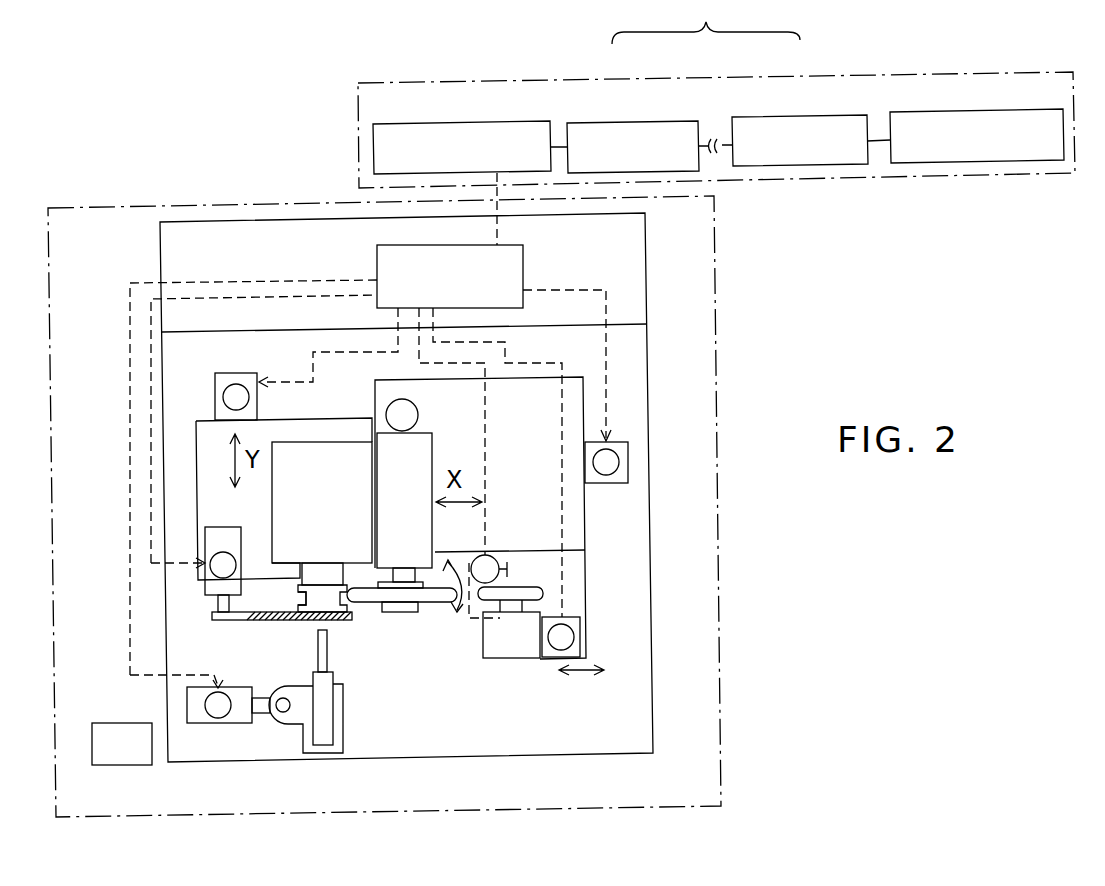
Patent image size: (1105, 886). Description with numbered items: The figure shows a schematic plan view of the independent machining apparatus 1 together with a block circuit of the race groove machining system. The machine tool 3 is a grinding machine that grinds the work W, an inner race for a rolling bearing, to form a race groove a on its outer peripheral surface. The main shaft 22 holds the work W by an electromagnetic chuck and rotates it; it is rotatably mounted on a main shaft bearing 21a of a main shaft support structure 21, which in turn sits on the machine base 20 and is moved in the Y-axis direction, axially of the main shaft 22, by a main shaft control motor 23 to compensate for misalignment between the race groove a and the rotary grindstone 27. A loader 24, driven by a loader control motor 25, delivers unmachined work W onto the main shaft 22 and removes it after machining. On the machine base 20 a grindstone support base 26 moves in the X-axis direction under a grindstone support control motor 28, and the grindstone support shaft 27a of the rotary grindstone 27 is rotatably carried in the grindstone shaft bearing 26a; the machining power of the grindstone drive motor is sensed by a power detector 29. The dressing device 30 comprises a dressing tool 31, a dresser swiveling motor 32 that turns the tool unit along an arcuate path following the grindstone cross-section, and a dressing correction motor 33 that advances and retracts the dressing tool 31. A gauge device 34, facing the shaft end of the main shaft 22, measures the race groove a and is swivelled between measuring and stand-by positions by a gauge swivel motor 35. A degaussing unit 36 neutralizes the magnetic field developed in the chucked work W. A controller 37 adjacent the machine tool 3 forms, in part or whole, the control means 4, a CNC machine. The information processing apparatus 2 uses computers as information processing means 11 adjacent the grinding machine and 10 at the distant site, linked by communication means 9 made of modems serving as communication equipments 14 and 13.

The independent machining apparatus 1 is at (150, 204).
The information processing apparatus 2 is at (358, 121).
The machine tool 3 is at (156, 372).
The control means 4 is at (377, 268).
The communication means 9 is at (706, 22).
The information processing means 10 is at (926, 111).
The information processing means 11 is at (447, 123).
The communication equipment 13 is at (775, 116).
The communication equipment 14 is at (633, 122).
The machine base 20 is at (183, 350).
The main shaft support structure 21 is at (212, 462).
The main shaft bearing 21a is at (288, 498).
The main shaft 22 is at (320, 570).
The main shaft control motor 23 is at (218, 398).
The loader 24 is at (257, 619).
The loader control motor 25 is at (206, 582).
The grindstone support base 26 is at (548, 430).
The grindstone shaft bearing 26a is at (423, 450).
The rotary grindstone 27 is at (432, 604).
The grindstone support shaft 27a is at (398, 612).
The grindstone support control motor 28 is at (628, 462).
The power detector 29 is at (418, 403).
The dressing device 30 is at (508, 640).
The dressing tool 31 is at (543, 592).
The dresser swiveling motor 32 is at (499, 562).
The dressing correction motor 33 is at (580, 637).
The gauge device 34 is at (325, 733).
The gauge swivel motor 35 is at (222, 724).
The degaussing unit 36 is at (122, 755).
The controller 37 is at (229, 222).
The race groove a is at (302, 598).
The work W is at (328, 600).